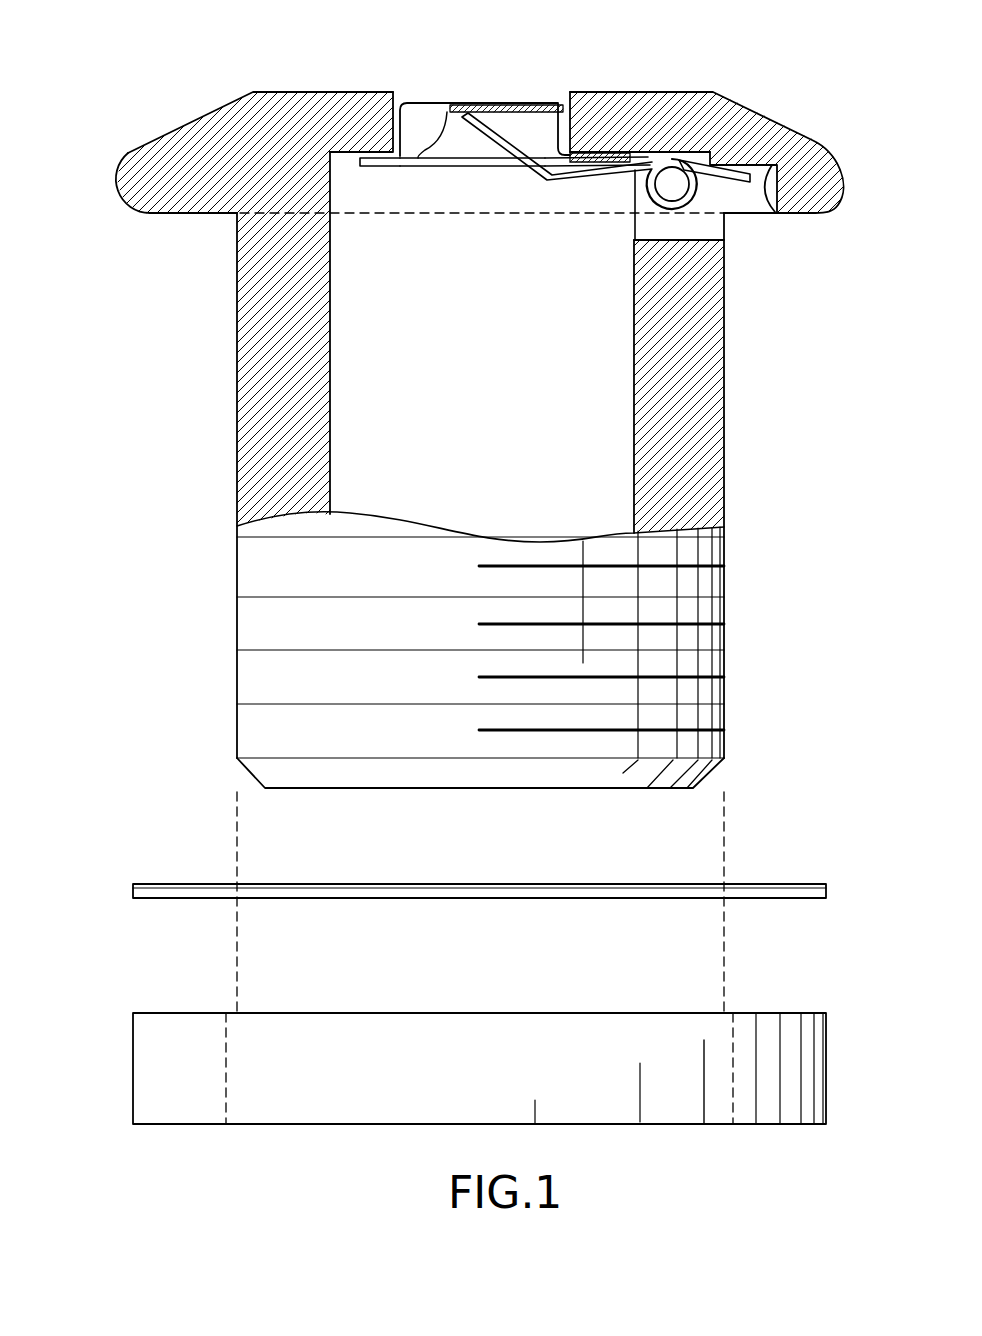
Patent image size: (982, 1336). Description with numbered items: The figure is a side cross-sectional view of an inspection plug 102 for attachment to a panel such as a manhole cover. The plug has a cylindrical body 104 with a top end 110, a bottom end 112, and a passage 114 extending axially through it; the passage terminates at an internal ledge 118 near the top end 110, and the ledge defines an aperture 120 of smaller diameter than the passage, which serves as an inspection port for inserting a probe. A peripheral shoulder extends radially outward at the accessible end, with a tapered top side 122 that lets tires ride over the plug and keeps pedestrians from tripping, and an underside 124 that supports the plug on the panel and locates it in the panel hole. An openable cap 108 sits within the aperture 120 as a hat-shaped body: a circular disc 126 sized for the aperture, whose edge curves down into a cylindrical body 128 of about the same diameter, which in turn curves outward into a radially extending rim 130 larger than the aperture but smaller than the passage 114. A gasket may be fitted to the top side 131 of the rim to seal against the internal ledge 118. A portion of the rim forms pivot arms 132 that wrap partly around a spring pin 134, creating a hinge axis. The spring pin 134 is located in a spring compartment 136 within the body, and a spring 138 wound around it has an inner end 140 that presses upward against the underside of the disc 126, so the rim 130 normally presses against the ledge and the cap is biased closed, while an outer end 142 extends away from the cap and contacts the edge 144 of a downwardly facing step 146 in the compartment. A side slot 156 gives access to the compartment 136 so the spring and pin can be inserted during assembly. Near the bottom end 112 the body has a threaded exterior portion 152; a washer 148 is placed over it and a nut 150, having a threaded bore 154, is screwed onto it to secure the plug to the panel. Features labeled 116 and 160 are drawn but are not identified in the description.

The inspection plug 102 is at (230, 378).
The body 104 is at (246, 455).
The openable cap 108 is at (566, 98).
The top end 110 is at (329, 92).
The bottom end 112 is at (295, 792).
The passage 114 is at (578, 457).
The inner wall surface 116 is at (331, 401).
The internal ledge 118 is at (347, 160).
The aperture 120 is at (570, 76).
The tapered top side 122 is at (197, 113).
The underside 124 is at (196, 213).
The circular disc 126 is at (546, 105).
The cylindrical body 128 is at (520, 175).
The radially extending rim 130 is at (370, 164).
The top side of rim 131 is at (373, 155).
The pivot arms 132 is at (672, 190).
The spring pin 134 is at (683, 162).
The spring compartment 136 is at (650, 232).
The spring 138 is at (608, 184).
The inner end of spring 140 is at (560, 182).
The outer end of spring 142 is at (740, 244).
The edge of step 144 is at (722, 150).
The downwardly facing step 146 is at (765, 207).
The washer 148 is at (128, 893).
The nut 150 is at (133, 1072).
The threaded exterior portion 152 is at (220, 522).
The threaded bore 154 is at (737, 1057).
The side slot 156 is at (740, 248).
The head rounded end 160 is at (145, 162).